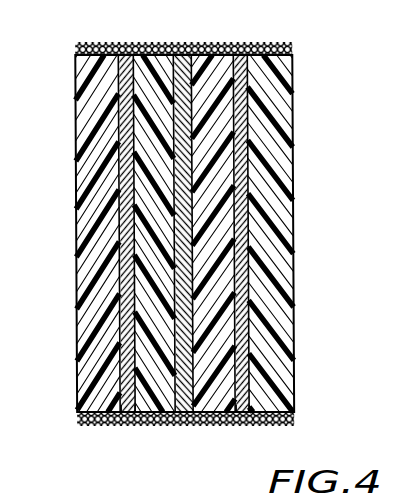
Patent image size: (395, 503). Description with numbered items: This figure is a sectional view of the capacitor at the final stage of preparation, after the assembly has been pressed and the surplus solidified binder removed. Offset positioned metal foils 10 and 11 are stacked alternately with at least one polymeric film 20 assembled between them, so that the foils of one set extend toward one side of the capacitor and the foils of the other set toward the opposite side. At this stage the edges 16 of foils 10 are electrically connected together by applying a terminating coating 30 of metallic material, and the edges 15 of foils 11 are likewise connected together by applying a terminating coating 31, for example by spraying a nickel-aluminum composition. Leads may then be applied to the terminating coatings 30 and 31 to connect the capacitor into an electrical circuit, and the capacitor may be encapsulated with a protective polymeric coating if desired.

The metal foil 10 is at (125, 252).
The metal foil 11 is at (183, 126).
The edge of foil 15 is at (184, 48).
The edge of foil 16 is at (133, 425).
The polymeric film 20 is at (90, 154).
The terminating coating 30 is at (108, 423).
The terminating coating 31 is at (266, 45).